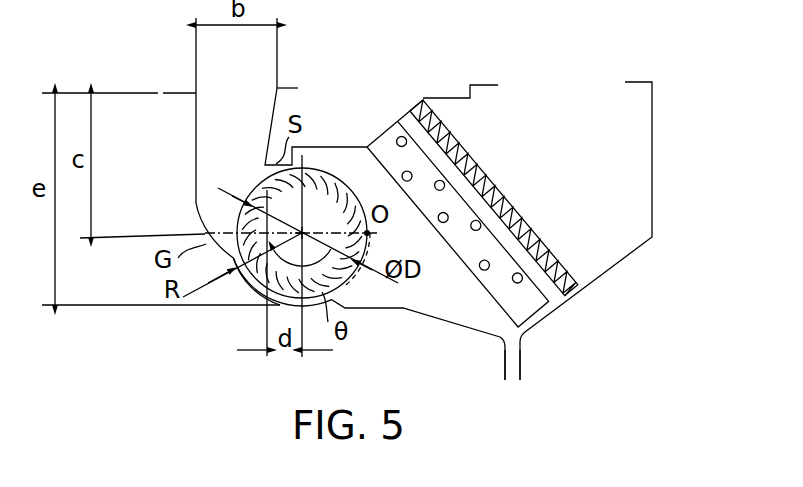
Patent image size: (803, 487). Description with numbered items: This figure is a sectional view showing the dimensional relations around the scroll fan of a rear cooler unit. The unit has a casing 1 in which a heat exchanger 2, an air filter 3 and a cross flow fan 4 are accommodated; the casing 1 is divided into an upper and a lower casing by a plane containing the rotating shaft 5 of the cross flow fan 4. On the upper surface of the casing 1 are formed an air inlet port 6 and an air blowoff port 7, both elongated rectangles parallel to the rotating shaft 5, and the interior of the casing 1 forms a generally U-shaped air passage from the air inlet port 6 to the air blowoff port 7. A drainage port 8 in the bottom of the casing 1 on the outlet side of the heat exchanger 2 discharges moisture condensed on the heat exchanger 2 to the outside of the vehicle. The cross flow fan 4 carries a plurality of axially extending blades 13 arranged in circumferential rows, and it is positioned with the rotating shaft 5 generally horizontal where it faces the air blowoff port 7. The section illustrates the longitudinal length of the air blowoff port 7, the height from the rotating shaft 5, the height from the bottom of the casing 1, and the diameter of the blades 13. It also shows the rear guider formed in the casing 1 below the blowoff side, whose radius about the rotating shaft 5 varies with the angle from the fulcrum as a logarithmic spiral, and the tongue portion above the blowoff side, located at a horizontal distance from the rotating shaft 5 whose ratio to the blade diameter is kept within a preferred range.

The casing 1 is at (652, 131).
The heat exchanger 2 is at (482, 286).
The air filter 3 is at (560, 270).
The cross flow fan 4 is at (352, 285).
The rotating shaft 5 is at (313, 205).
The air inlet port 6 is at (574, 98).
The air blowoff port 7 is at (230, 104).
The drainage port 8 is at (521, 362).
The blades 13 is at (248, 286).